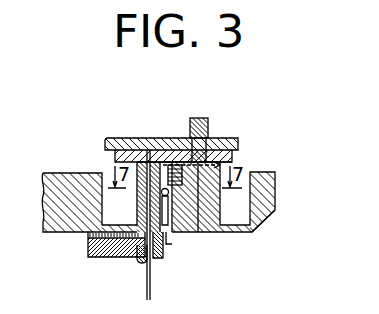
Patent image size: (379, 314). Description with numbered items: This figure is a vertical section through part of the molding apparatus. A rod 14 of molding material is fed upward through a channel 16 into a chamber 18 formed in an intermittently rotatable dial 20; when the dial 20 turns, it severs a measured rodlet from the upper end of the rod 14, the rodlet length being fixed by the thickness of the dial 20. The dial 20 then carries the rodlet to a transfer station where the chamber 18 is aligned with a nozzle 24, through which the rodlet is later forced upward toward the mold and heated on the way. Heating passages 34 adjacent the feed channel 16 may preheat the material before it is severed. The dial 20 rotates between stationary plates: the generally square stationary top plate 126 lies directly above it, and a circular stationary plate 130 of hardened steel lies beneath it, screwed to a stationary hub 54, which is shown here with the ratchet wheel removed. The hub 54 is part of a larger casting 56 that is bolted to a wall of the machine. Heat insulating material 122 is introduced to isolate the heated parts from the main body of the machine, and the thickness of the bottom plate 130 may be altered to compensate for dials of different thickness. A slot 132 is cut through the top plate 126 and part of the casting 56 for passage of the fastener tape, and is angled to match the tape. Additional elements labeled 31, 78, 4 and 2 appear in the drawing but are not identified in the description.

The rod 14 is at (147, 297).
The channel 16 is at (139, 260).
The chamber 18 is at (158, 148).
The dial 20 is at (222, 165).
The nozzle 24 is at (208, 135).
The body block 31 is at (196, 232).
The heating passages 34 is at (163, 257).
The hub 54 is at (204, 203).
The casting 56 is at (48, 204).
The member 78 is at (11, 121).
The member 4 is at (6, 163).
The member 2 is at (11, 298).
The heat insulating material 122 is at (90, 241).
The stationary top plate 126 is at (128, 140).
The circular stationary plate 130 is at (232, 164).
The slot 132 is at (278, 197).